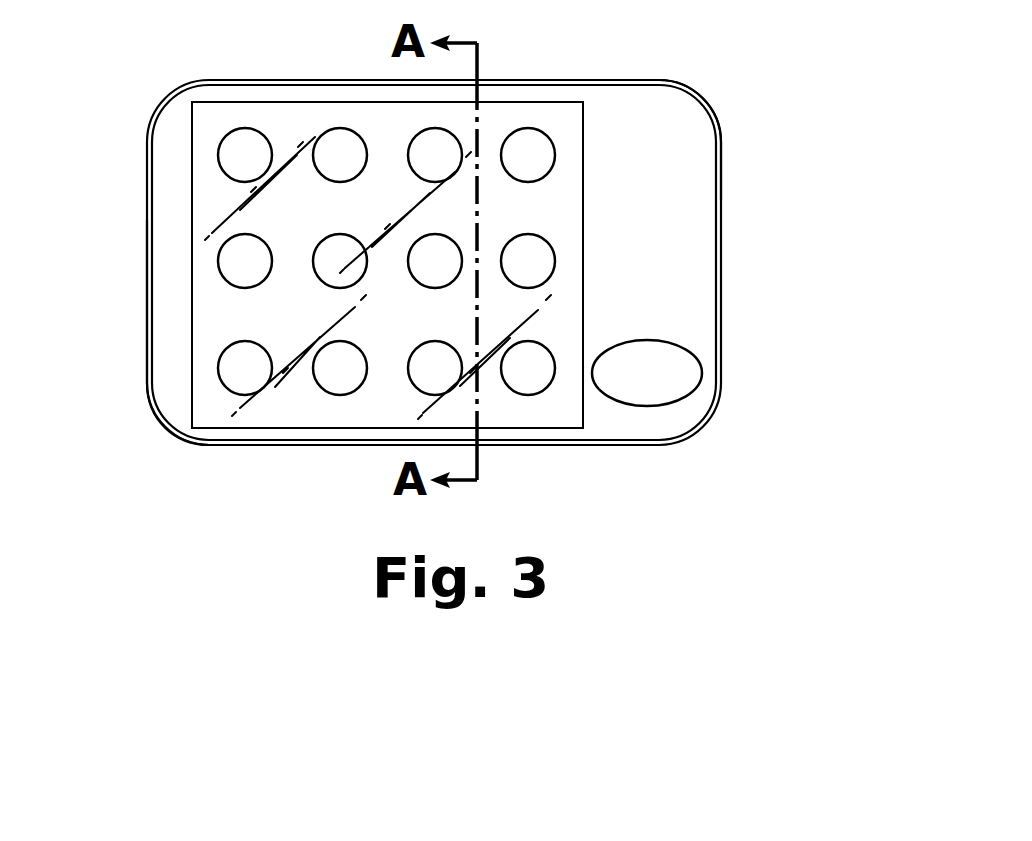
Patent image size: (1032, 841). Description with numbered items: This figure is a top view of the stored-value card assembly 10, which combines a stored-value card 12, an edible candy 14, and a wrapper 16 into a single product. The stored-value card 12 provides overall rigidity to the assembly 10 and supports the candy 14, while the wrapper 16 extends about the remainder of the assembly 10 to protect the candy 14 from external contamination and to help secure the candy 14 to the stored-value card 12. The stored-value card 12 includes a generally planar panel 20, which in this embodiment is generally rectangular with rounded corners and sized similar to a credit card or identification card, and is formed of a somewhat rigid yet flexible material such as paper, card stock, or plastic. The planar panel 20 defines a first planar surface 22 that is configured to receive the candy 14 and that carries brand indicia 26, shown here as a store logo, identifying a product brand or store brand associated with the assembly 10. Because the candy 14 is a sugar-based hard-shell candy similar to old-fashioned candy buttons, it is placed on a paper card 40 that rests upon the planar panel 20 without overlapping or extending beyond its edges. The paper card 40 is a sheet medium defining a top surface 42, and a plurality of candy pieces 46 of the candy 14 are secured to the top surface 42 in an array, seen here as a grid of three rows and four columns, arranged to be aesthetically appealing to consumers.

The stored-value card assembly 10 is at (850, 66).
The stored-value card 12 is at (690, 188).
The candy 14 is at (542, 112).
The wrapper 16 is at (693, 97).
The planar panel 20 is at (685, 247).
The first planar surface 22 is at (157, 350).
The brand indicia 26 is at (697, 335).
The paper card 40 is at (198, 205).
The top surface 42 is at (228, 310).
The candy pieces 46 is at (335, 153).